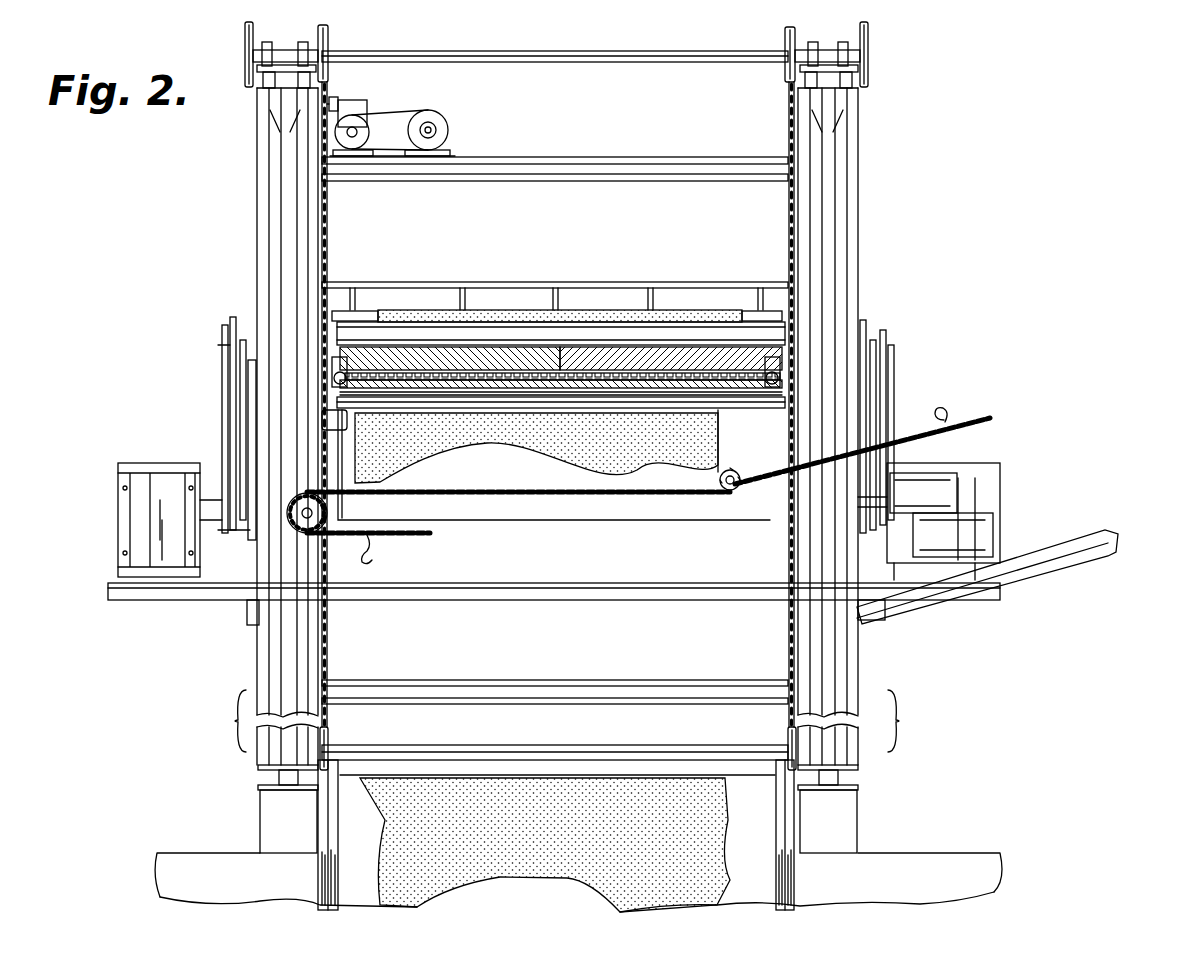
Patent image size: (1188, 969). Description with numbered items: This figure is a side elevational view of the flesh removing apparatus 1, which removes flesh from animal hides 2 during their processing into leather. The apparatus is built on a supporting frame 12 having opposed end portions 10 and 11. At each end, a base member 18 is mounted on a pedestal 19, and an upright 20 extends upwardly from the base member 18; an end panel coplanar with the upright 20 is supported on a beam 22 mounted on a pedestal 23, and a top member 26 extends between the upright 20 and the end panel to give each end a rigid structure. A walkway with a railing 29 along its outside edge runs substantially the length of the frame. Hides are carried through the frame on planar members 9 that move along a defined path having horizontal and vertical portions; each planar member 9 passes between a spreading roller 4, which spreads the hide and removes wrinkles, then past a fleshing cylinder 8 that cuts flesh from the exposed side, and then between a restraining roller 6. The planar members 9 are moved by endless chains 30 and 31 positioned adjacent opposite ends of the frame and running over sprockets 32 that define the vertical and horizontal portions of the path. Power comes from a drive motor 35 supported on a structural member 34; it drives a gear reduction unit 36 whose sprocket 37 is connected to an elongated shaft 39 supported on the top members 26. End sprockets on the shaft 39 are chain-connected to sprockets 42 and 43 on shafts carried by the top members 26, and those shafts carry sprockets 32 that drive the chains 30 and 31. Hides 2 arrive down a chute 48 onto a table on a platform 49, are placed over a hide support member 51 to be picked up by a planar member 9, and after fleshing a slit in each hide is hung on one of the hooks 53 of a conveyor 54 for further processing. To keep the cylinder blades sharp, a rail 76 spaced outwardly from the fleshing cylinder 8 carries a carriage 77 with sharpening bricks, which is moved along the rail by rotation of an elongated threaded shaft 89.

The flesh removing apparatus 1 is at (912, 128).
The animal hide 2 is at (495, 443).
The spreading roller 4 is at (745, 410).
The restraining roller 6 is at (694, 330).
The fleshing cylinder 8 is at (658, 350).
The planar member 9 is at (716, 521).
The end portion 10 is at (853, 665).
The end portion 11 is at (262, 645).
The supporting frame 12 is at (262, 86).
The base member 18 is at (265, 781).
The pedestal 19 is at (272, 820).
The upright 20 is at (290, 658).
The beam 22 is at (182, 600).
The pedestal 23 is at (247, 606).
The top member 26 is at (283, 108).
The railing 29 is at (518, 283).
The endless chain 30 is at (789, 240).
The endless chain 31 is at (327, 248).
The sprocket 32 is at (328, 42).
The structural member 34 is at (594, 158).
The drive motor 35 is at (446, 128).
The gear reduction unit 36 is at (358, 115).
The sprocket 37 is at (332, 104).
The elongated shaft 39 is at (578, 52).
The sprocket 42 is at (868, 46).
The sprocket 43 is at (248, 58).
The chute 48 is at (1105, 530).
The platform 49 is at (645, 752).
The hide support member 51 is at (495, 681).
The hook 53 is at (946, 410).
The conveyor 54 is at (565, 493).
The rail 76 is at (603, 395).
The carriage 77 is at (347, 360).
The elongated threaded shaft 89 is at (466, 372).